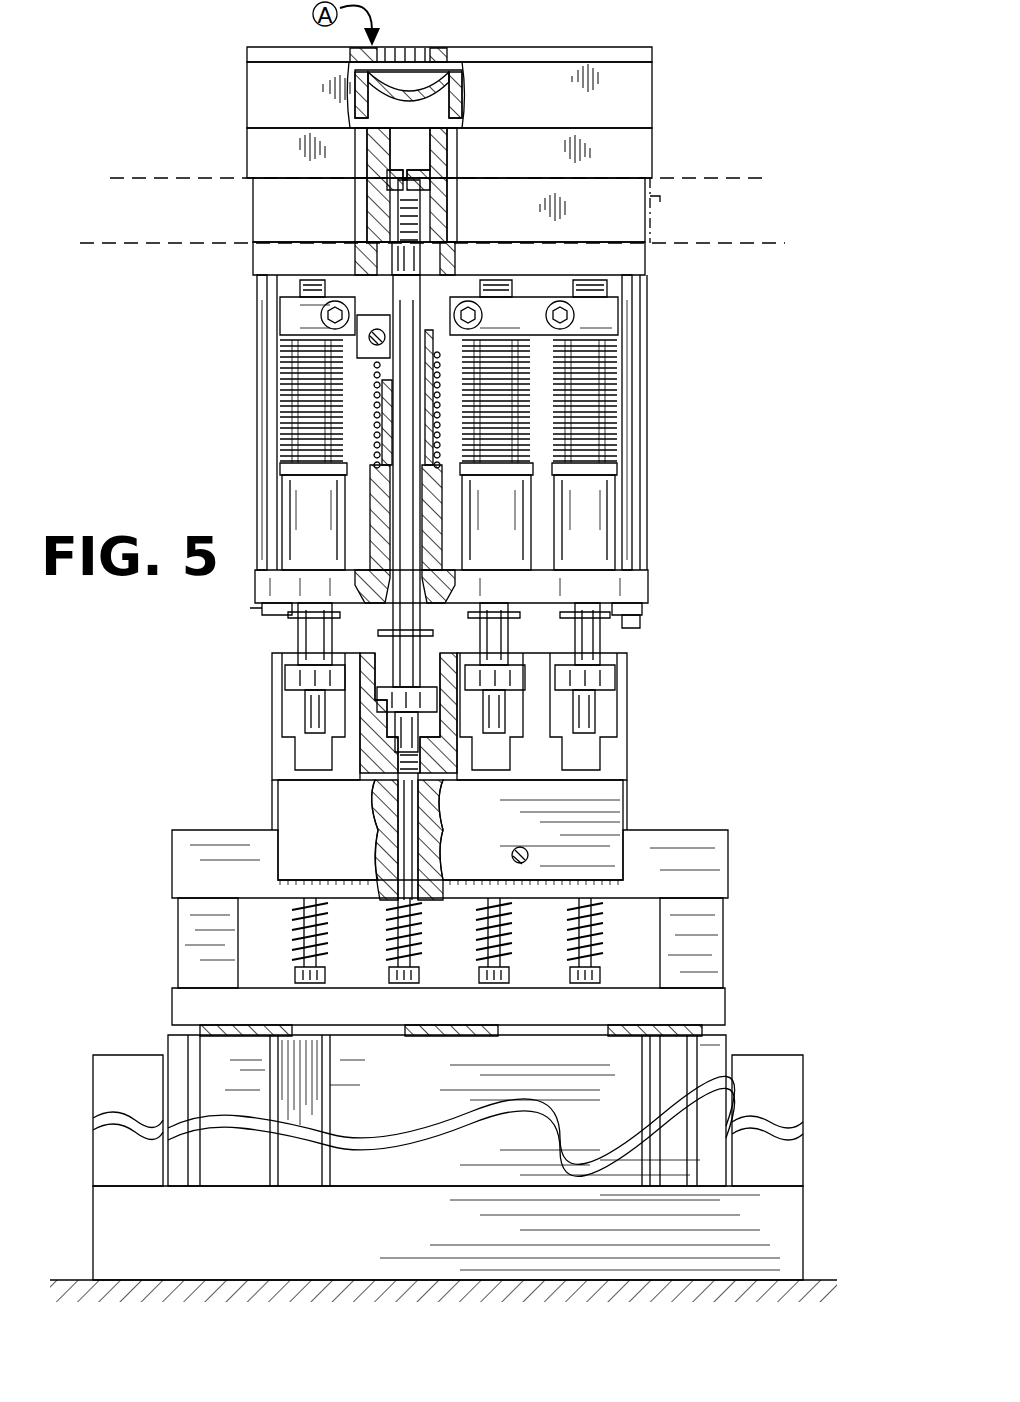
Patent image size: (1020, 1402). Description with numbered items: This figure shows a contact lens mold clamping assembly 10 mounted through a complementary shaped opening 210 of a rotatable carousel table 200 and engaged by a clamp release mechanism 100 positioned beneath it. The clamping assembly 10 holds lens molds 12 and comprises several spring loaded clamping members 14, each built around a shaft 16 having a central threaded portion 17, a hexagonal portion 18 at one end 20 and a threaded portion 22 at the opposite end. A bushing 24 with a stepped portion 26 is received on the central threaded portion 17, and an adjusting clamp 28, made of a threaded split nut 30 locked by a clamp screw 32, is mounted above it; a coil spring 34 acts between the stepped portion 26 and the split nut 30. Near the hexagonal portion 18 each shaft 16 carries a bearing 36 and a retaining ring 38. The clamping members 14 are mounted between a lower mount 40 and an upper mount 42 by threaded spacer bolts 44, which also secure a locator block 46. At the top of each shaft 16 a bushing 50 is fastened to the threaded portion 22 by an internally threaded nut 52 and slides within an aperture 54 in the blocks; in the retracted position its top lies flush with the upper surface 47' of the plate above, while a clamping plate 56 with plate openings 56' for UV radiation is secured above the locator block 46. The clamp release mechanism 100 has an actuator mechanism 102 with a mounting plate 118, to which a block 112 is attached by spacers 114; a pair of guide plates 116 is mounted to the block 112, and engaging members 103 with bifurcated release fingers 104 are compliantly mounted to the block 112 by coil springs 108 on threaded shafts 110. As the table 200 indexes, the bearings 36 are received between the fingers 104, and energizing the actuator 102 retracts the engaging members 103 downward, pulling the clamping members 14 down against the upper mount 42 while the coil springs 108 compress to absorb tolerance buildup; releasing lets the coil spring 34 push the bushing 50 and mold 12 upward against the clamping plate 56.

The clamping assembly 10 is at (825, 205).
The lens mold 12 is at (405, 62).
The spring loaded clamping member 14 is at (265, 623).
The shaft 16 is at (298, 645).
The central threaded portion 17 is at (318, 282).
The hexagonal portion 18 is at (303, 718).
The end 20 is at (318, 737).
The threaded portion 22 is at (422, 190).
The bushing 24 is at (370, 520).
The stepped portion 26 is at (322, 466).
The adjusting clamp 28 is at (292, 311).
The threaded split nut 30 is at (290, 336).
The clamp screw 32 is at (380, 328).
The coil spring 34 is at (305, 400).
The bearing 36 is at (288, 680).
The retaining ring 38 is at (395, 633).
The lower mount 40 is at (650, 583).
The upper mount 42 is at (253, 208).
The threaded spacer bolt 44 is at (258, 487).
The locator block 46 is at (247, 145).
The upper surface 47' is at (420, 95).
The bushing 50 is at (452, 140).
The internally threaded nut 52 is at (403, 176).
The aperture 54 is at (372, 180).
The clamping plate 56 is at (427, 41).
The plate opening 56' is at (472, 35).
The clamp release mechanism 100 is at (755, 720).
The actuator mechanism 102 is at (448, 1105).
The engaging member 103 is at (275, 750).
The release finger 104 is at (272, 700).
The coil spring 108 is at (323, 940).
The threaded shaft 110 is at (296, 905).
The block 112 is at (718, 858).
The spacer 114 is at (188, 938).
The guide plate 116 is at (600, 808).
The mounting plate 118 is at (443, 1244).
The table 200 is at (745, 178).
The opening 210 is at (660, 200).